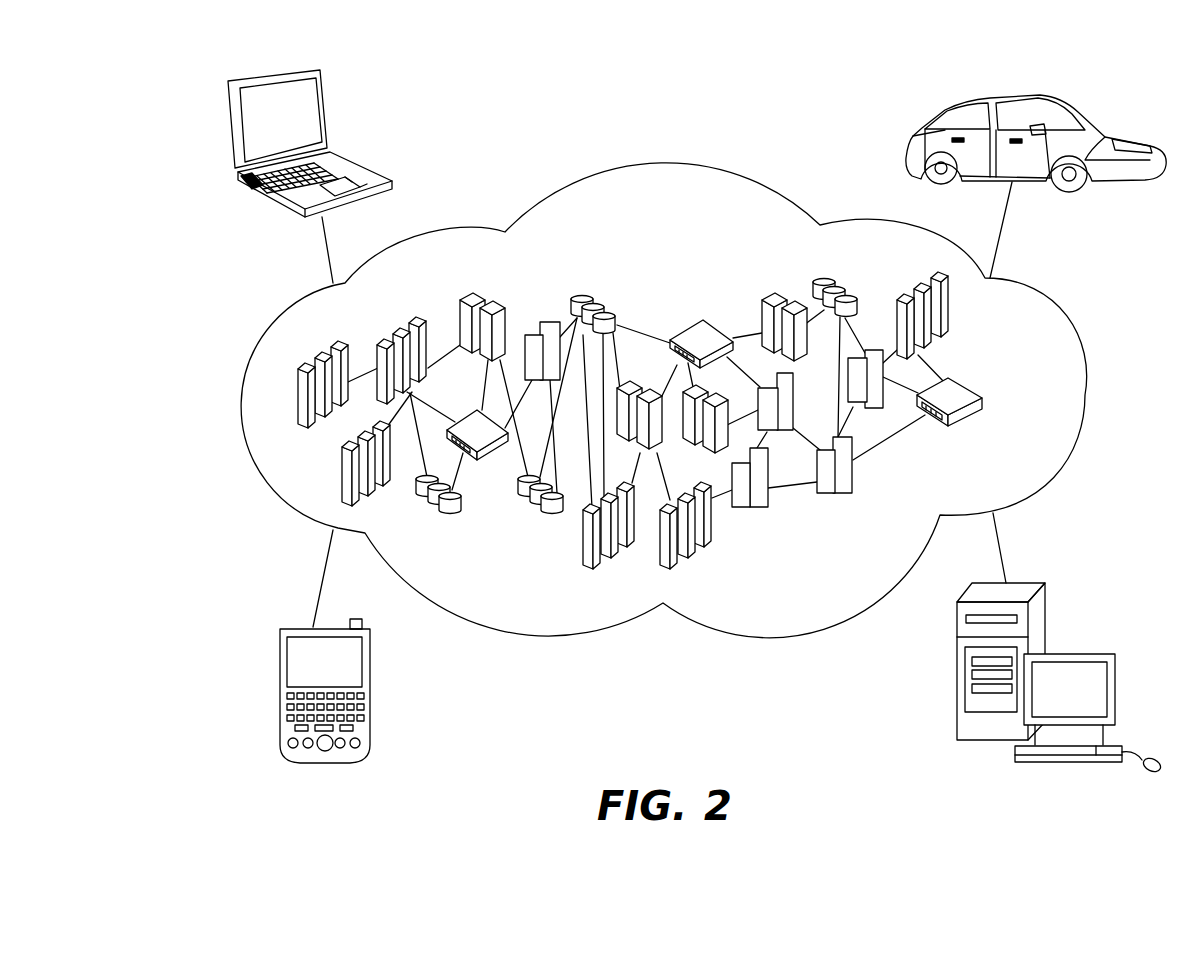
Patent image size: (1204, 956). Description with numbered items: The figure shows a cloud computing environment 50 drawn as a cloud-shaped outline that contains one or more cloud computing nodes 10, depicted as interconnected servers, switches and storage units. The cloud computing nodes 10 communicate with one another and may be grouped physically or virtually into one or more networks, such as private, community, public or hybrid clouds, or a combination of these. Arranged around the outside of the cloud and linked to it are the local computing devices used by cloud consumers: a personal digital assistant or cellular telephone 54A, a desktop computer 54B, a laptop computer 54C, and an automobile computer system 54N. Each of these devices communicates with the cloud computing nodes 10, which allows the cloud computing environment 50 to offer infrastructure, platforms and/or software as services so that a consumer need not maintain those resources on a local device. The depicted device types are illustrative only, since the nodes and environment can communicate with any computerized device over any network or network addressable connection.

The cloud computing nodes 10 is at (572, 247).
The cloud computing environment 50 is at (668, 167).
The personal digital assistant or cellular telephone 54A is at (355, 661).
The desktop computer 54B is at (1087, 657).
The laptop computer 54C is at (313, 125).
The automobile computer system 54N is at (920, 130).